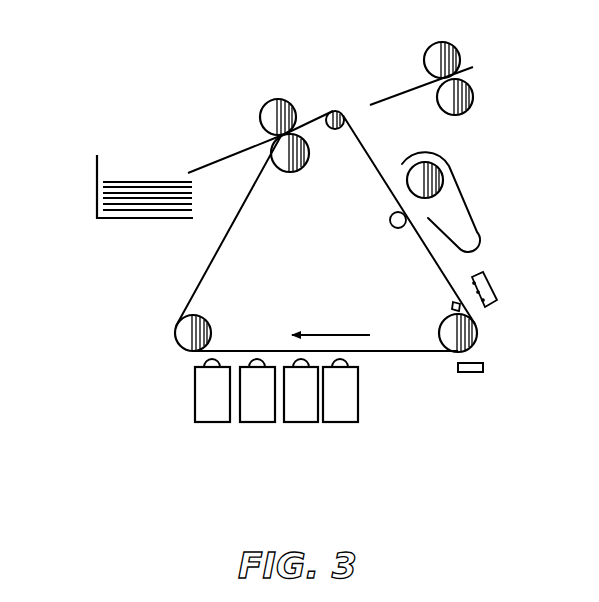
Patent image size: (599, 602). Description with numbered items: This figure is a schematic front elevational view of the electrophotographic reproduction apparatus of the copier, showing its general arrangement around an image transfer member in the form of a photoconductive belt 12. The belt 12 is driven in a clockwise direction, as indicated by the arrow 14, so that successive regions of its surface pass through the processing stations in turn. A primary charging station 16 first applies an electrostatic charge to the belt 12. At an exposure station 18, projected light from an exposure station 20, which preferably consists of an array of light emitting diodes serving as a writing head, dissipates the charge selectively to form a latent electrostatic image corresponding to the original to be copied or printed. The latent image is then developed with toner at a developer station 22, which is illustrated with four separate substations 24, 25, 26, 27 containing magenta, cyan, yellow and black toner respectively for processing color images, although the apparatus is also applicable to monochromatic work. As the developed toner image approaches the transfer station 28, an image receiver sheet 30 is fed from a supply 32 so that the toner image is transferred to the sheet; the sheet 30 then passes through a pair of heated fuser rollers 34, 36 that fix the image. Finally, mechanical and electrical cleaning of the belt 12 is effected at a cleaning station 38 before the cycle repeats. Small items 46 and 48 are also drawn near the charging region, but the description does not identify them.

The photoconductive belt 12 is at (232, 222).
The arrow 14 is at (333, 335).
The primary charging station 16 is at (495, 268).
The exposure station 18 is at (490, 355).
The exposure station 20 is at (472, 372).
The developer station 22 is at (307, 436).
The substation 24 is at (210, 422).
The substation 25 is at (258, 413).
The substation 26 is at (300, 413).
The substation 27 is at (347, 413).
The transfer station 28 is at (297, 95).
The image receiver sheet 30 is at (207, 162).
The supply 32 is at (95, 198).
The heated fuser roller 34 is at (465, 108).
The heated fuser roller 36 is at (425, 52).
The cleaning station 38 is at (470, 202).
The erase lamp 46 is at (497, 300).
The sensor 48 is at (453, 303).